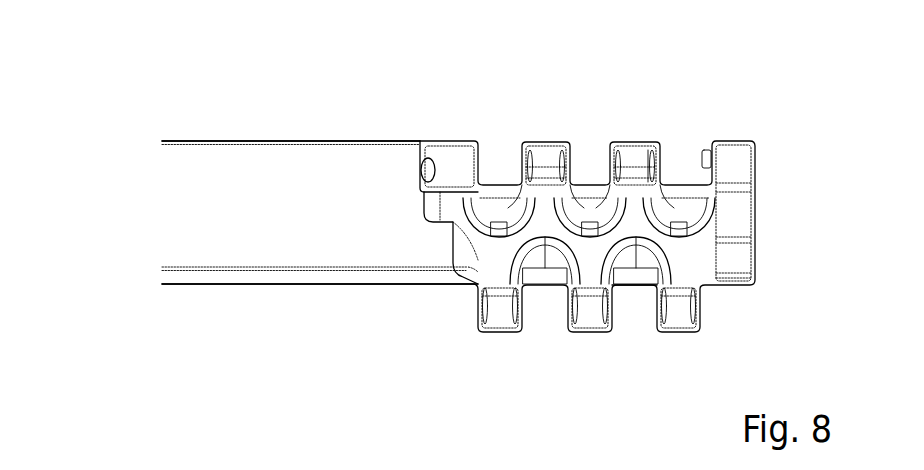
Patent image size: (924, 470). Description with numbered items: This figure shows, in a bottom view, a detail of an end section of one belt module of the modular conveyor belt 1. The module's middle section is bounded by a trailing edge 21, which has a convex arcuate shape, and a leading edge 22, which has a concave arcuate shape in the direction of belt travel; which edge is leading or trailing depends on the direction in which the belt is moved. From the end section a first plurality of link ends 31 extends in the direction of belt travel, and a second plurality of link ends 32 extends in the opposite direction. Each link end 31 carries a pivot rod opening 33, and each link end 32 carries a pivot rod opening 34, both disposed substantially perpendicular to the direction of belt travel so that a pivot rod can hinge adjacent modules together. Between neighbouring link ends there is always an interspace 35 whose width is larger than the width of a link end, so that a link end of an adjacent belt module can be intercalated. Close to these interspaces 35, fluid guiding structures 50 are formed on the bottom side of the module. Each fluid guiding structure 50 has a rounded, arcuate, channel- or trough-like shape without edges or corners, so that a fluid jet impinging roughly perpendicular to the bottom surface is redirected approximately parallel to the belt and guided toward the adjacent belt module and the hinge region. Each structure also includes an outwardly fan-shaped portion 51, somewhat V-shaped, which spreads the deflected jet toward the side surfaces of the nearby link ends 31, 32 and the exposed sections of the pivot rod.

The modular conveyor belt 1 is at (397, 173).
The trailing edge 21 is at (292, 141).
The leading edge 22 is at (265, 278).
The first plurality of link ends 31 is at (588, 312).
The second plurality of link ends 32 is at (634, 162).
The pivot rod opening 33 is at (705, 303).
The pivot rod opening 34 is at (656, 168).
The interspace 35 is at (638, 305).
The fluid guiding structure 50 is at (638, 256).
The fan-shaped portion 51 is at (650, 244).